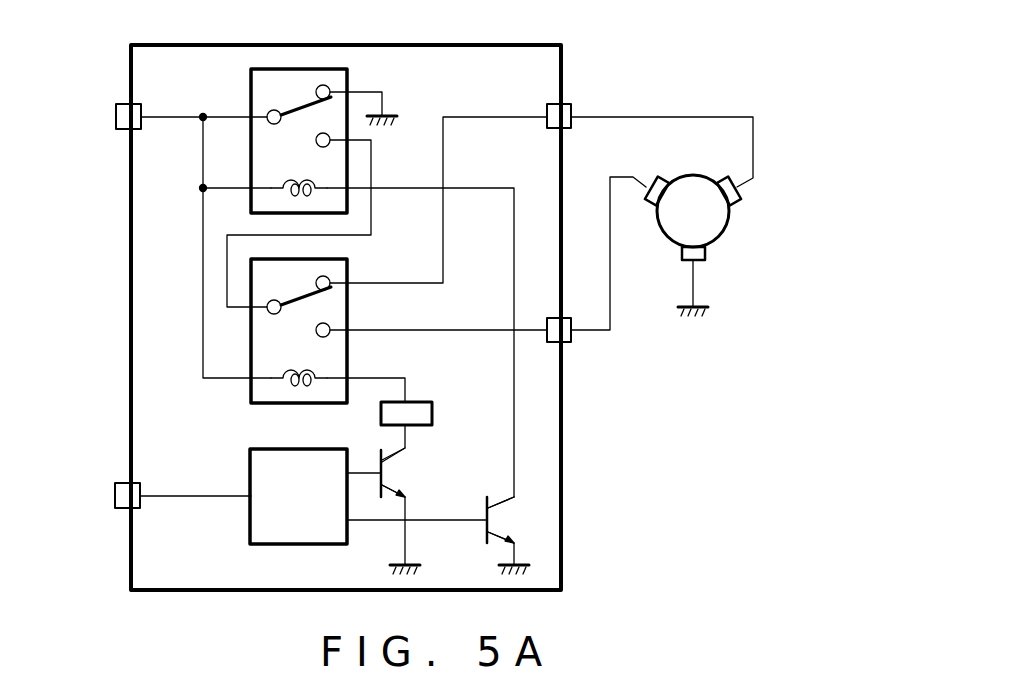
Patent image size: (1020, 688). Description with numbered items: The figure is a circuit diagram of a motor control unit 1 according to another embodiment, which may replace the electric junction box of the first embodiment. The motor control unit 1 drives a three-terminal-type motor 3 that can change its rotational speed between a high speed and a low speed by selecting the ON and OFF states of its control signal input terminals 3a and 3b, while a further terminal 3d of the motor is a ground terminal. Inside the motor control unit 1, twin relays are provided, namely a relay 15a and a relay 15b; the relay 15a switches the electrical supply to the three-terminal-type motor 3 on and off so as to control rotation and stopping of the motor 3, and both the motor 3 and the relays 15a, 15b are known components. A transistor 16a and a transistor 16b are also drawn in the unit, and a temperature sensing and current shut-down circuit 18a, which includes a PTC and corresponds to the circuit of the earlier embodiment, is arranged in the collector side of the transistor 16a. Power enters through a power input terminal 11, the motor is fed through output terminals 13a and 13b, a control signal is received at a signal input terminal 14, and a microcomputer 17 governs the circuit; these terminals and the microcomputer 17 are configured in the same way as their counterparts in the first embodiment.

The motor control unit 1 is at (492, 45).
The power input terminal 11 is at (115, 124).
The output terminal 13a is at (571, 103).
The output terminal 13b is at (571, 342).
The signal input terminal 14 is at (115, 498).
The relay 15a is at (250, 93).
The relay 15b is at (247, 397).
The transistor 16a is at (378, 453).
The transistor 16b is at (483, 508).
The microcomputer 17 is at (250, 470).
The temperature sensing and current shut-down circuit 18a is at (458, 392).
The three-terminal-type motor 3 is at (730, 223).
The control signal input terminal 3a is at (733, 177).
The control signal input terminal 3b is at (658, 177).
The ground terminal 3d is at (705, 262).